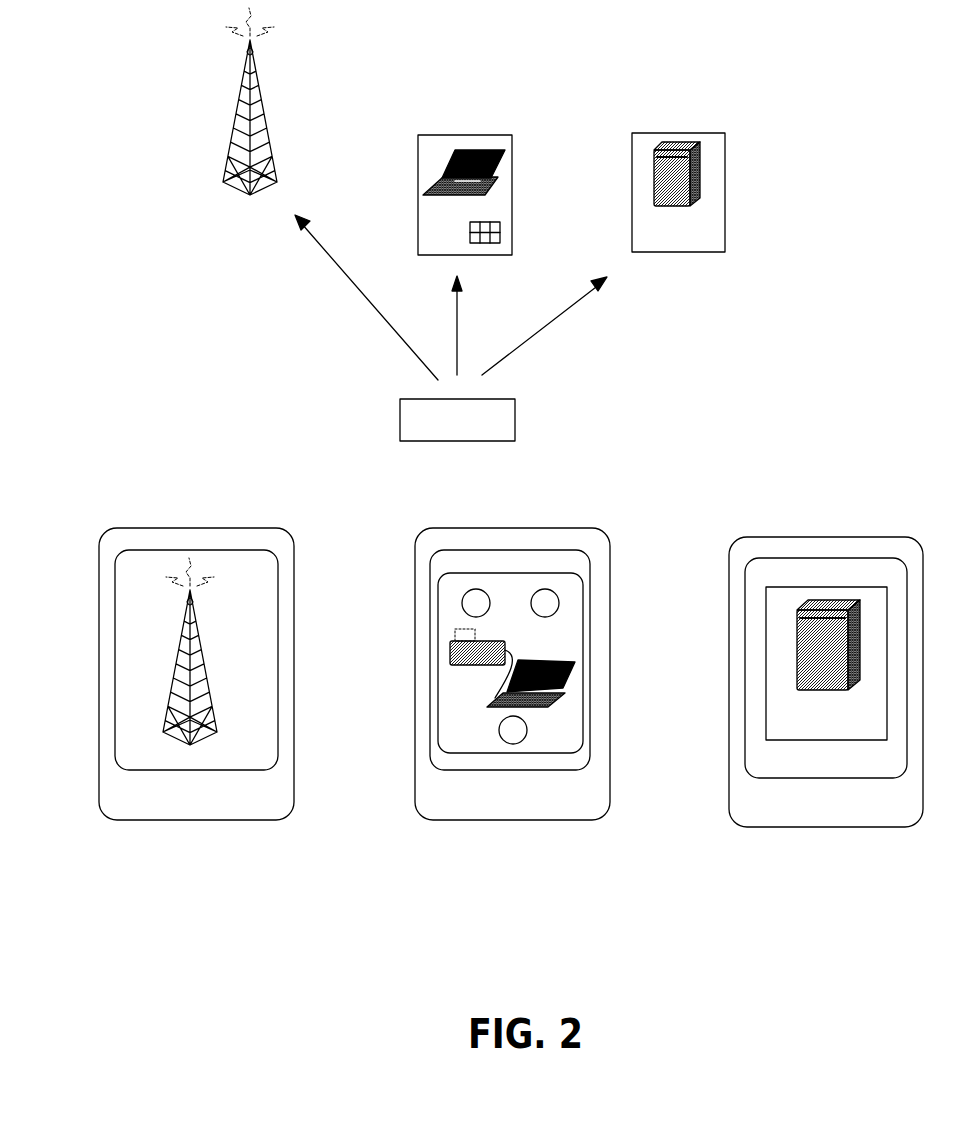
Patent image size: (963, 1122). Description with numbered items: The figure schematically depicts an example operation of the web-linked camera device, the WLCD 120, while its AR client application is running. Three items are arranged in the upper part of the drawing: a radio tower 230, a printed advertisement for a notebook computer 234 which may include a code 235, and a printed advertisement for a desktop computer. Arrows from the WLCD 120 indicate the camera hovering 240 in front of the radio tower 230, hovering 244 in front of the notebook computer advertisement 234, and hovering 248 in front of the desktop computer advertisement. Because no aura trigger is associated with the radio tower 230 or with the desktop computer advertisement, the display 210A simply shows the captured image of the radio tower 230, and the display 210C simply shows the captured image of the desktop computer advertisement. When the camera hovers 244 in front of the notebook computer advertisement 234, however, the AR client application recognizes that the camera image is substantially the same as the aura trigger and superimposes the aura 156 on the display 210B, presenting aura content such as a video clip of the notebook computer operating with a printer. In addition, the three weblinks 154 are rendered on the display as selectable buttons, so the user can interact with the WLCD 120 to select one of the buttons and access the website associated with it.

The WLCD 120 is at (400, 418).
The weblinks 154 is at (545, 603).
The aura 156 is at (440, 752).
The display 210A is at (115, 582).
The display 210B is at (480, 671).
The display 210C is at (769, 663).
The radio tower 230 is at (232, 158).
The printed advertisement for a notebook computer 234 is at (440, 135).
The code 235 is at (485, 222).
The camera hovering 240 is at (360, 291).
The camera hovering 244 is at (459, 325).
The camera hovering 248 is at (545, 326).